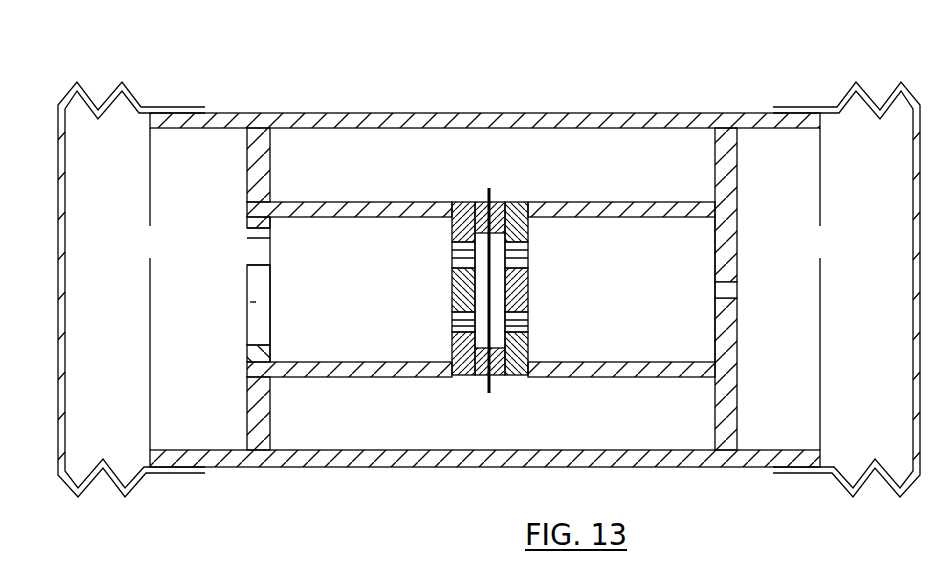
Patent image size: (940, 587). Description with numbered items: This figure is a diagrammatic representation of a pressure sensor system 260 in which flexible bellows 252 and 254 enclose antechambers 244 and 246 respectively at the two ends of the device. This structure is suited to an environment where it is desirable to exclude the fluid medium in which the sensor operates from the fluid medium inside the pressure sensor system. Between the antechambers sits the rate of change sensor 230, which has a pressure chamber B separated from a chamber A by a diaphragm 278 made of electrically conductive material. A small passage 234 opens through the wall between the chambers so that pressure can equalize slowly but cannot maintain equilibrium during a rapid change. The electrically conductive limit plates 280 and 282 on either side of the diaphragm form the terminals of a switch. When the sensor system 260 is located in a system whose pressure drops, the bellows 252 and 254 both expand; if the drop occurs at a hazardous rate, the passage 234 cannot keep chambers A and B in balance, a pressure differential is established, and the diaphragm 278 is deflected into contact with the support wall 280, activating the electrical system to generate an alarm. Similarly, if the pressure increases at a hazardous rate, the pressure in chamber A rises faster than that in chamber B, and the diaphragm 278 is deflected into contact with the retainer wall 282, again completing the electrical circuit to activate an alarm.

The sensor system 260 is at (622, 78).
The rate of change sensor 230 is at (386, 190).
The passage 234 is at (733, 292).
The antechamber 244 is at (127, 252).
The antechamber 246 is at (806, 254).
The flexible bellows 252 is at (118, 85).
The flexible bellows 254 is at (840, 98).
The diaphragm 278 is at (496, 303).
The limit plate 280 is at (462, 376).
The limit plate 282 is at (518, 373).